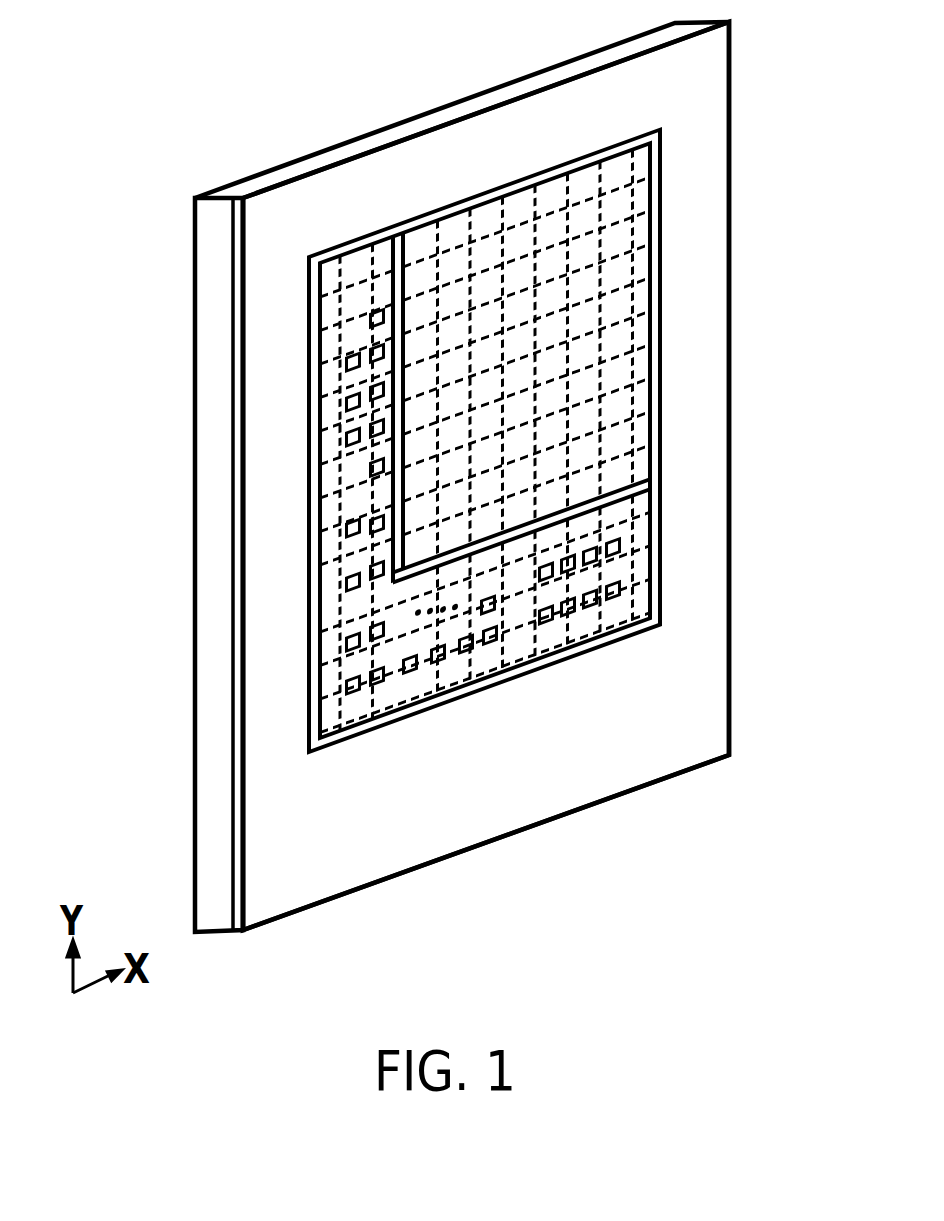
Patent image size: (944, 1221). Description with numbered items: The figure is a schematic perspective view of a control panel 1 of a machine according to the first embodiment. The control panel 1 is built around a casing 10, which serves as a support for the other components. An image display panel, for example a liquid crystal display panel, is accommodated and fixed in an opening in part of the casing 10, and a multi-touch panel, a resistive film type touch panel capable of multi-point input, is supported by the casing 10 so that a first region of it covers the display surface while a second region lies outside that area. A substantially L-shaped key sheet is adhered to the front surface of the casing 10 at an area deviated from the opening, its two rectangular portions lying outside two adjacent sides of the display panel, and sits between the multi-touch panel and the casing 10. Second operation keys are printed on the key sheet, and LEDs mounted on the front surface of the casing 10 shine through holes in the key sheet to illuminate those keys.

The control panel 1 is at (447, 52).
The casing 10 is at (310, 155).